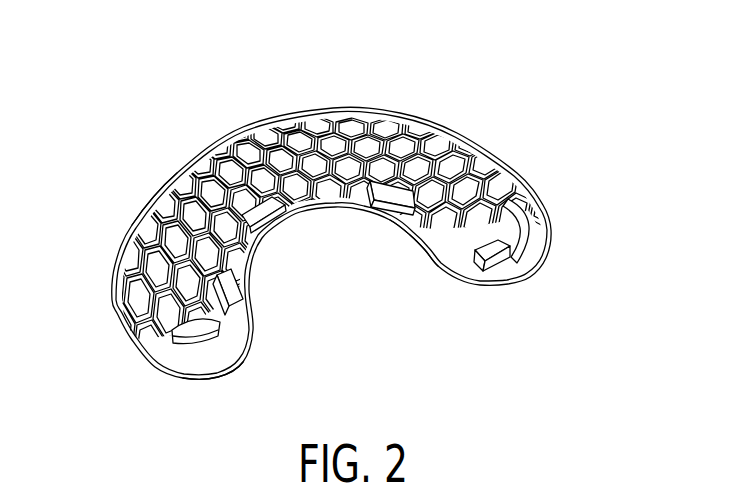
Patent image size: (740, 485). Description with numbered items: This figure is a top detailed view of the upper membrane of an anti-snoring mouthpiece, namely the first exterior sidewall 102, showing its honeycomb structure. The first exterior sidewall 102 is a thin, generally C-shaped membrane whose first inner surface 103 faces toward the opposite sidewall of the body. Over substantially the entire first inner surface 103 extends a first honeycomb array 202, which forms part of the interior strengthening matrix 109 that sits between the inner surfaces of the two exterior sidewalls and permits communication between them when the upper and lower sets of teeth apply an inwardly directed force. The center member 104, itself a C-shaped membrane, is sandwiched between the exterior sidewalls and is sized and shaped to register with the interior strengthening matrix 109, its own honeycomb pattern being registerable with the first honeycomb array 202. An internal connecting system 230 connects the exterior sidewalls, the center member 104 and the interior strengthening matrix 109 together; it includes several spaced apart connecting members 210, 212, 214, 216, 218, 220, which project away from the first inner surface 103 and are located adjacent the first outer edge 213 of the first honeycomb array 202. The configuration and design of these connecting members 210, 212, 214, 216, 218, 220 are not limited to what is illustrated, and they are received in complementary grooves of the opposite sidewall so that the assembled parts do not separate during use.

The first exterior sidewall 102 is at (505, 147).
The first inner surface 103 is at (414, 156).
The center member 104 is at (563, 478).
The interior strengthening matrix 109 is at (243, 127).
The first honeycomb array 202 is at (158, 196).
The connecting member 210 is at (180, 343).
The connecting member 212 is at (248, 318).
The first outer edge 213 is at (427, 258).
The connecting member 214 is at (278, 238).
The connecting member 216 is at (397, 211).
The connecting member 218 is at (490, 267).
The connecting member 220 is at (536, 238).
The internal connecting system 230 is at (206, 360).